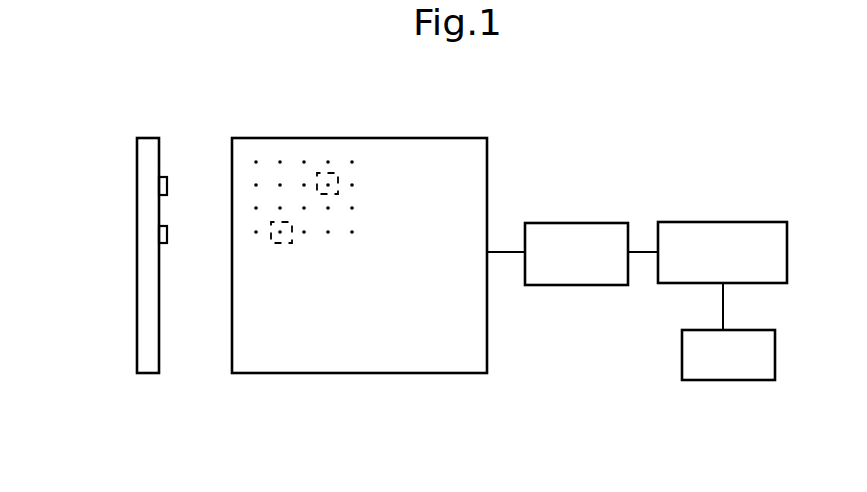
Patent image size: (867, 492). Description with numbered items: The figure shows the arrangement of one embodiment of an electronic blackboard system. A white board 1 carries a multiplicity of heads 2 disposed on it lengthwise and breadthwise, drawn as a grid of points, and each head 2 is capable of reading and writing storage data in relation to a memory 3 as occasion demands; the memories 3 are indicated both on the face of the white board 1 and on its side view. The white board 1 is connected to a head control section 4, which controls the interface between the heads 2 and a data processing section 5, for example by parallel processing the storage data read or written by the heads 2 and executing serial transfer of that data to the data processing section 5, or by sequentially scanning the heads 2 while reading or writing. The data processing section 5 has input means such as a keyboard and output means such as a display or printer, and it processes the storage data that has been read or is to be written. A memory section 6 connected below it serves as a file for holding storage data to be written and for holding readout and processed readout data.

The white board 1 is at (137, 162).
The head 2 is at (256, 162).
The memory 3 is at (337, 174).
The head control section 4 is at (577, 223).
The data processing section 5 is at (718, 222).
The memory section 6 is at (682, 355).